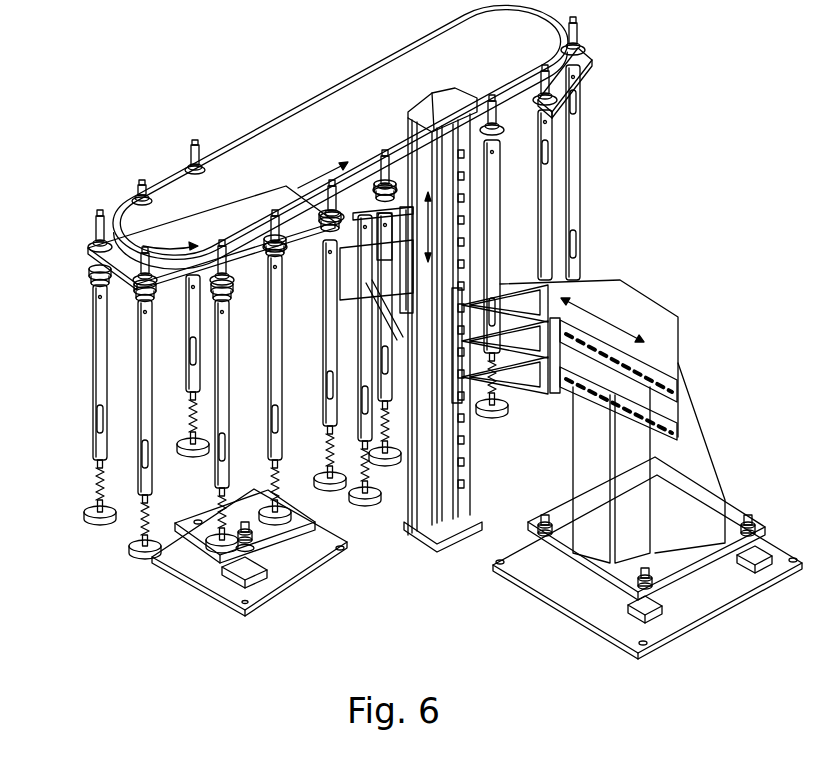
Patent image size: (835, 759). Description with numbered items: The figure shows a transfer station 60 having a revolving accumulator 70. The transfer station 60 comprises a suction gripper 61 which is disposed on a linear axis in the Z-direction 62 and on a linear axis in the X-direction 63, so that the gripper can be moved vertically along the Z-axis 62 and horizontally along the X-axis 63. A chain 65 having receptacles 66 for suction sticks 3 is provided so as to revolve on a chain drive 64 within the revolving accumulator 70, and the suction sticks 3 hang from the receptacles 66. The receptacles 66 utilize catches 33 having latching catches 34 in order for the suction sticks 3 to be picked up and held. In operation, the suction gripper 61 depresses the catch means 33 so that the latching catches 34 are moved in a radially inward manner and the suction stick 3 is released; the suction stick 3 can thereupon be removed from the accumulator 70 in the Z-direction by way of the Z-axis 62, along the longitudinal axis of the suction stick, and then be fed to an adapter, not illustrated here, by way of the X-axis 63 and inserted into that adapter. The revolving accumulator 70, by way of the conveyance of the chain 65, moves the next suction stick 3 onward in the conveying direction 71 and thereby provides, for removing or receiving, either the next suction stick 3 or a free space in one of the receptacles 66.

The suction stick 3 is at (147, 365).
The catch 33 is at (130, 300).
The latching catch 34 is at (103, 277).
The transfer station 60 is at (415, 329).
The suction gripper 61 is at (367, 263).
The linear axis in the Z-direction 62 is at (440, 135).
The linear axis in the X-direction 63 is at (620, 330).
The chain drive 64 is at (190, 200).
The chain 65 is at (90, 258).
The receptacle 66 is at (242, 240).
The revolving accumulator 70 is at (237, 141).
The conveying direction 71 is at (130, 205).